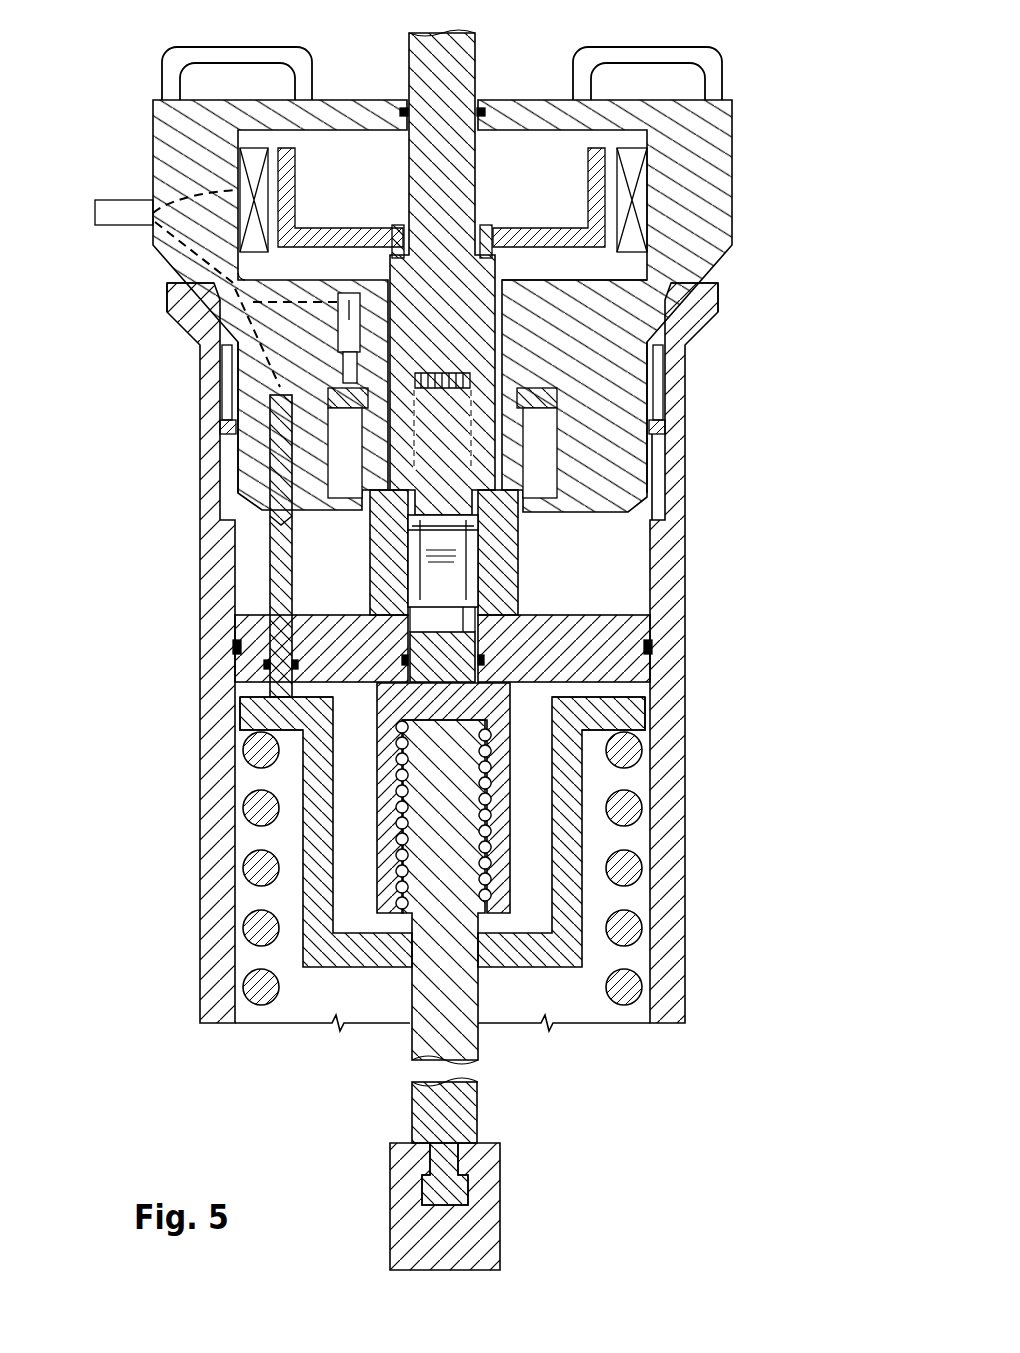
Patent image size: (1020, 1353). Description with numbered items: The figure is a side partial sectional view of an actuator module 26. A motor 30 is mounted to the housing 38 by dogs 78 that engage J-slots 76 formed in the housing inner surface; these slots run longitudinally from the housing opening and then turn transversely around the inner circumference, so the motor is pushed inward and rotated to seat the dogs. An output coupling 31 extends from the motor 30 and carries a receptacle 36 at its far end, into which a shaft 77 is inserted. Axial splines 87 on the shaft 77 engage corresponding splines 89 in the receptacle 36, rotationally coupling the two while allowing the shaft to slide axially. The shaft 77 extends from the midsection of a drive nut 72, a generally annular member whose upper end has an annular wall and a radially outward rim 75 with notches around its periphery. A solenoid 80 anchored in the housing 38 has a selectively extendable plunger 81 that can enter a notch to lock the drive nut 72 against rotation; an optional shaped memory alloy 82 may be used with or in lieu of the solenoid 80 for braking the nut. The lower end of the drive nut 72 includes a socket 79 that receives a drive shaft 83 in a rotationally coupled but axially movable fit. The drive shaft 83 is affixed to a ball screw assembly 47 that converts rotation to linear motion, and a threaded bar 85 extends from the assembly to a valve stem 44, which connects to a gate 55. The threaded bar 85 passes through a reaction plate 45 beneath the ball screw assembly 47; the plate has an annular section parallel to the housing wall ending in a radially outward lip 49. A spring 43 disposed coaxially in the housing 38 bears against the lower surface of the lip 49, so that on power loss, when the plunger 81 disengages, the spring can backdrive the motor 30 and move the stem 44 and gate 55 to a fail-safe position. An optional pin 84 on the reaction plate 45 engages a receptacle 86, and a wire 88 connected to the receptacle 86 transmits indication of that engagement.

The actuator module 26 is at (118, 400).
The motor 30 is at (752, 172).
The output coupling 31 is at (497, 262).
The receptacle 36 is at (640, 284).
The housing 38 is at (688, 815).
The spring 43 is at (250, 978).
The valve stem 44 is at (478, 1120).
The reaction plate 45 is at (362, 925).
The ball screw assembly 47 is at (512, 778).
The lip 49 is at (250, 712).
The gate 55 is at (500, 1196).
The drive nut 72 is at (520, 565).
The rim 75 is at (665, 422).
The J-slots 76 is at (265, 400).
The shaft 77 is at (655, 456).
The dogs 78 is at (220, 434).
The socket 79 is at (412, 520).
The solenoid 80 is at (350, 305).
The plunger 81 is at (262, 374).
The shaped memory alloy 82 is at (665, 385).
The drive shaft 83 is at (505, 620).
The pin 84 is at (270, 560).
The threaded bar 85 is at (480, 988).
The receptacle 86 is at (260, 465).
The axial splines 87 is at (600, 470).
The wire 88 is at (178, 312).
The splines 89 is at (660, 342).